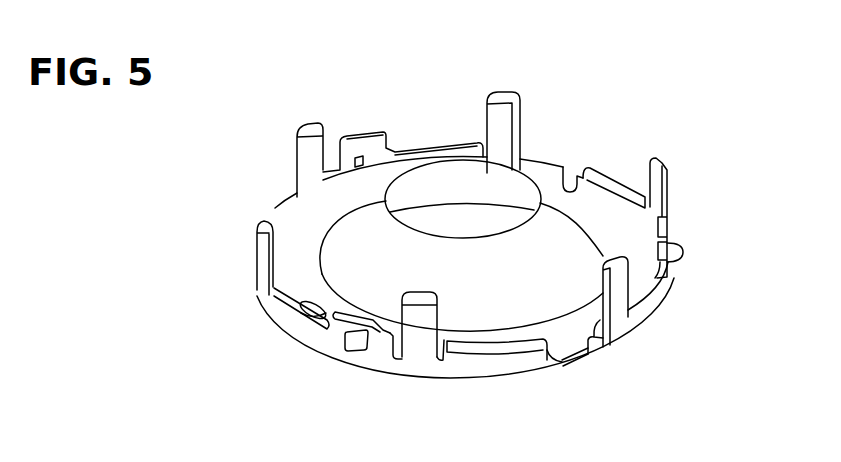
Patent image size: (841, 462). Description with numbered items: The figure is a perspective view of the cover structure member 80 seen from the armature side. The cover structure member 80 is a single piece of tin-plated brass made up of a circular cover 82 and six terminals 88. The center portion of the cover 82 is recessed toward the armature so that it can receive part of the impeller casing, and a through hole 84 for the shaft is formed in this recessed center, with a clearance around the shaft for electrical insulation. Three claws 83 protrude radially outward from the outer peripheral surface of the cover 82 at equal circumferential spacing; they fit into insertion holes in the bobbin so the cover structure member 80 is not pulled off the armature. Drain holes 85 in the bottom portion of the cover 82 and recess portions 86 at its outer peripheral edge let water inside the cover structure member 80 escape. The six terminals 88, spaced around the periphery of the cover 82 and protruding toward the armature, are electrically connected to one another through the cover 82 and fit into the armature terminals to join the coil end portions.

The cover structure member 80 is at (503, 383).
The cover 82 is at (347, 210).
The claw 83 is at (682, 248).
The through hole 84 is at (442, 192).
The drain hole 85 is at (313, 300).
The recess portion 86 is at (553, 177).
The terminal 88 is at (305, 124).